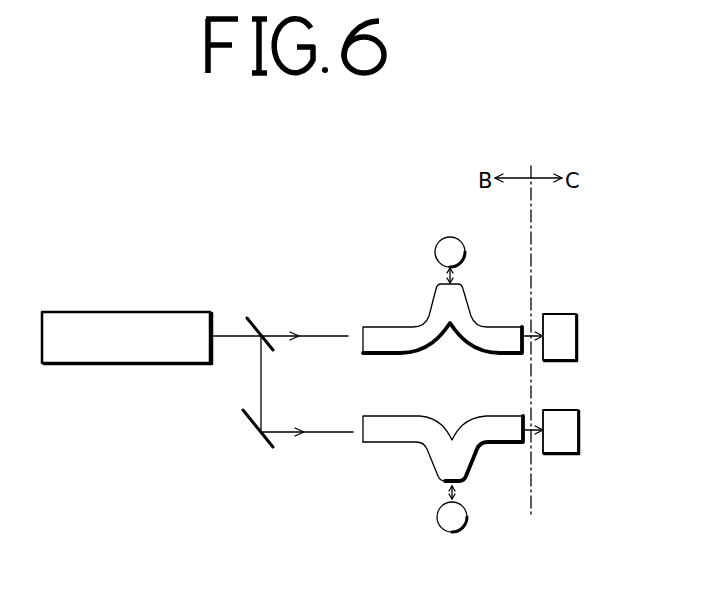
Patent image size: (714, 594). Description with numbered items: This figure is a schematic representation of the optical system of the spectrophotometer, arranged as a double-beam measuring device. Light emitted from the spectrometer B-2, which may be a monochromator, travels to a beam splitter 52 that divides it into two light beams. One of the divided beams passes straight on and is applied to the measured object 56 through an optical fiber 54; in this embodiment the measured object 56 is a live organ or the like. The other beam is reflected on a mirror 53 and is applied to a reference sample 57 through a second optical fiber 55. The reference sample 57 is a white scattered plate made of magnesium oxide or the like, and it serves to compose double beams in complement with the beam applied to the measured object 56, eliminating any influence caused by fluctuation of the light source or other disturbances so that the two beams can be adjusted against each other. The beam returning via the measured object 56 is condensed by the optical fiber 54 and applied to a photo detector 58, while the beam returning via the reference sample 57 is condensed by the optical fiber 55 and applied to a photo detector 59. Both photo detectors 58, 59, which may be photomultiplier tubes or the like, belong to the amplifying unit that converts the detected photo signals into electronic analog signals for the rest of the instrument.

The spectrometer B-2 is at (105, 364).
The beam splitter 52 is at (251, 318).
The mirror 53 is at (246, 416).
The optical fiber 54 is at (412, 346).
The optical fiber 55 is at (494, 418).
The measured object 56 is at (453, 238).
The reference sample 57 is at (437, 525).
The photo detector 58 is at (578, 333).
The photo detector 59 is at (580, 425).